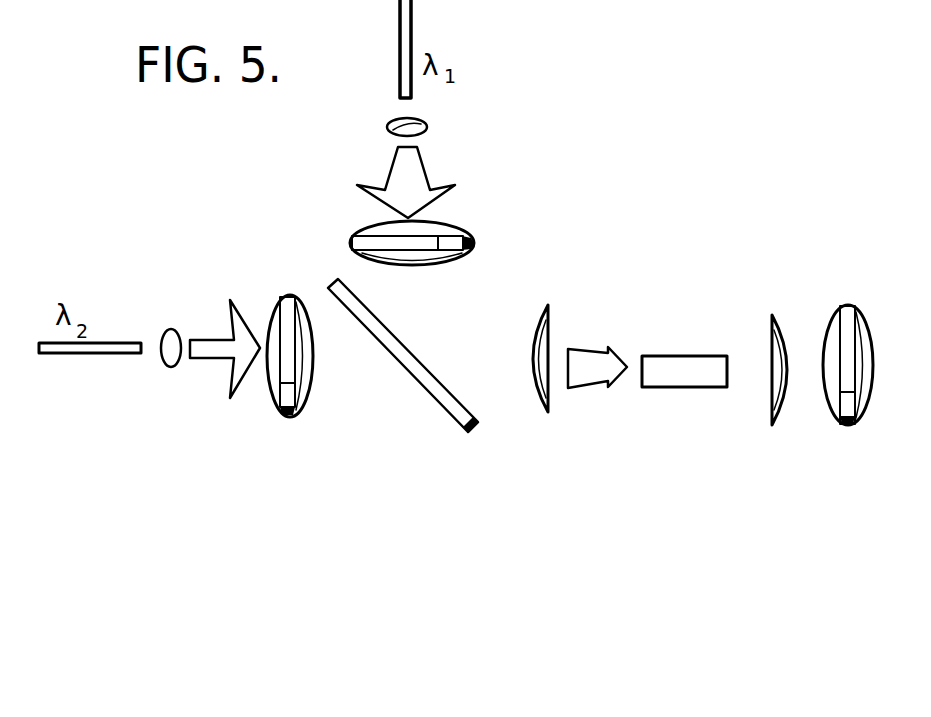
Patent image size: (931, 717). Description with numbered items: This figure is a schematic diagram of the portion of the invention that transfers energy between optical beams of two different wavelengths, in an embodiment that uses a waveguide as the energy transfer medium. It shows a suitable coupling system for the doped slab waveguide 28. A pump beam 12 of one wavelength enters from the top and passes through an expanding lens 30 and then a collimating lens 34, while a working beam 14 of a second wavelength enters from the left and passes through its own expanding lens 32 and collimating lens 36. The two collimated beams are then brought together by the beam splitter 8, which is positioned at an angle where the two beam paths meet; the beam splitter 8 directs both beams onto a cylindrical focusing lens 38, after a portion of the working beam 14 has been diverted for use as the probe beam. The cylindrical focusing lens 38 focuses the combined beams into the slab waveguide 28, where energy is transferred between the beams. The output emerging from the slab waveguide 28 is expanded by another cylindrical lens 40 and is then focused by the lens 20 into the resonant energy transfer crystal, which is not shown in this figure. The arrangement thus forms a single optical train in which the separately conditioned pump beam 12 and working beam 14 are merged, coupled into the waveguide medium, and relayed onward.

The beam splitter 8 is at (442, 402).
The pump beam 12 is at (405, 46).
The working beam 14 is at (121, 357).
The lens 20 is at (837, 340).
The doped slab waveguide 28 is at (678, 373).
The expanding lens 30 is at (388, 124).
The expanding lens 32 is at (174, 360).
The collimating lens 34 is at (458, 232).
The collimating lens 36 is at (307, 397).
The cylindrical focusing lens 38 is at (550, 402).
The cylindrical lens 40 is at (773, 357).